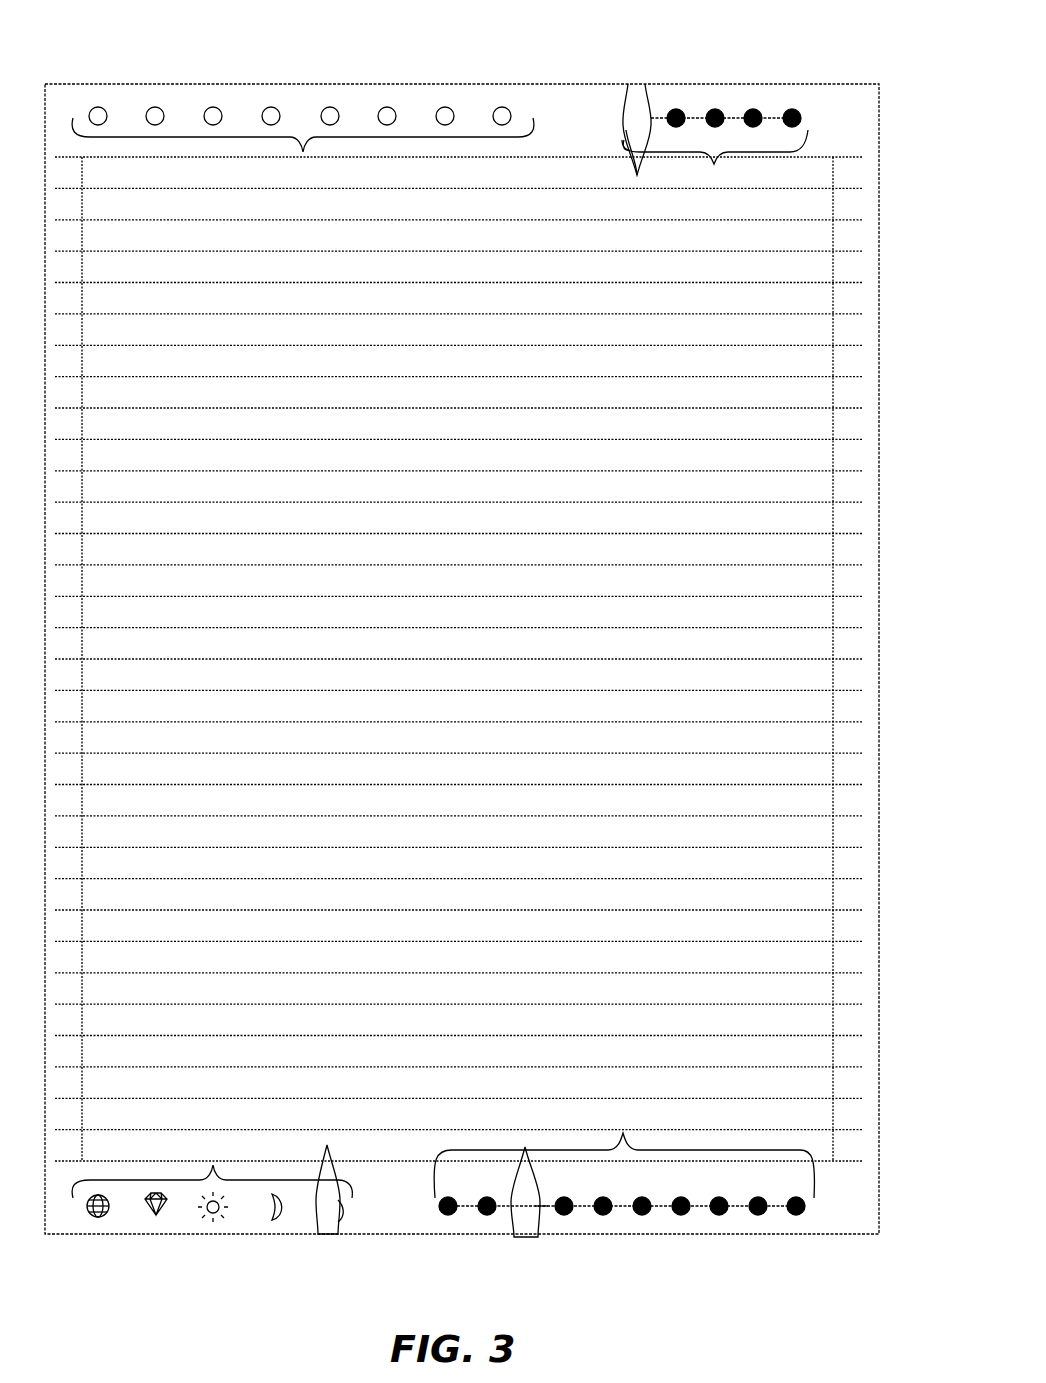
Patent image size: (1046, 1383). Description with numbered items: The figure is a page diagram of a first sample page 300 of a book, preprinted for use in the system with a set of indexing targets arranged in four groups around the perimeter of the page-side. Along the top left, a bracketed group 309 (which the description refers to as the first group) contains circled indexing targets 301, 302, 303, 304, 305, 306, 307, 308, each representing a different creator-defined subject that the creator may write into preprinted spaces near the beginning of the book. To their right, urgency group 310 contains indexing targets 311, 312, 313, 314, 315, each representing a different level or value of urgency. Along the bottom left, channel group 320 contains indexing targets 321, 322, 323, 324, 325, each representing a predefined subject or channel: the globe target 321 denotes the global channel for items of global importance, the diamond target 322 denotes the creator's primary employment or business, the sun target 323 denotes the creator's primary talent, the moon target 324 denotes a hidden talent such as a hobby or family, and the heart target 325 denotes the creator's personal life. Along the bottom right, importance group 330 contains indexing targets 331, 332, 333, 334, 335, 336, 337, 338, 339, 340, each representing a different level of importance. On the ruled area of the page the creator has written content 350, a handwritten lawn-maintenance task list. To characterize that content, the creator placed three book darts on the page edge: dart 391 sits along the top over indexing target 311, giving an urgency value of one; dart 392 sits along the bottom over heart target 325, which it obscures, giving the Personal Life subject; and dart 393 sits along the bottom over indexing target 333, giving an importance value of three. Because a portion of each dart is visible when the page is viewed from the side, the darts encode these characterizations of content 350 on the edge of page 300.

The first sample page 300 is at (822, 30).
The indexing target 301 is at (98, 106).
The indexing target 302 is at (155, 106).
The indexing target 303 is at (213, 106).
The indexing target 304 is at (271, 106).
The indexing target 305 is at (330, 106).
The indexing target 306 is at (387, 106).
The indexing target 307 is at (445, 106).
The indexing target 308 is at (502, 106).
The task indicator group 309 is at (303, 149).
The urgency group 310 is at (715, 156).
The indexing target 311 is at (625, 106).
The indexing target 312 is at (678, 108).
The indexing target 313 is at (718, 108).
The indexing target 314 is at (756, 108).
The indexing target 315 is at (798, 110).
The channel group 320 is at (212, 1168).
The globe indexing target 321 is at (100, 1217).
The diamond indexing target 322 is at (158, 1215).
The sun indexing target 323 is at (214, 1213).
The moon indexing target 324 is at (275, 1220).
The heart indexing target 325 is at (340, 1212).
The importance group 330 is at (624, 1156).
The indexing target 331 is at (440, 1212).
The indexing target 332 is at (480, 1213).
The indexing target 333 is at (538, 1210).
The indexing target 334 is at (570, 1213).
The indexing target 335 is at (609, 1213).
The indexing target 336 is at (648, 1213).
The indexing target 337 is at (687, 1213).
The indexing target 338 is at (725, 1213).
The indexing target 339 is at (764, 1213).
The indexing target 340 is at (802, 1213).
The content 350 is at (742, 473).
The book dart 391 is at (623, 126).
The book dart 392 is at (330, 1152).
The book dart 393 is at (520, 1152).